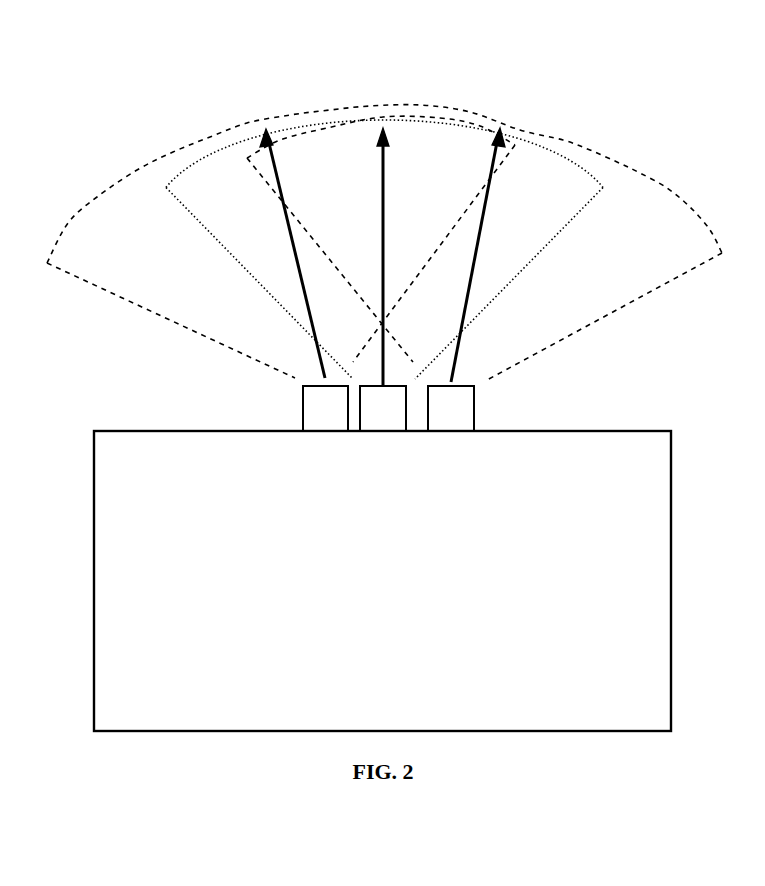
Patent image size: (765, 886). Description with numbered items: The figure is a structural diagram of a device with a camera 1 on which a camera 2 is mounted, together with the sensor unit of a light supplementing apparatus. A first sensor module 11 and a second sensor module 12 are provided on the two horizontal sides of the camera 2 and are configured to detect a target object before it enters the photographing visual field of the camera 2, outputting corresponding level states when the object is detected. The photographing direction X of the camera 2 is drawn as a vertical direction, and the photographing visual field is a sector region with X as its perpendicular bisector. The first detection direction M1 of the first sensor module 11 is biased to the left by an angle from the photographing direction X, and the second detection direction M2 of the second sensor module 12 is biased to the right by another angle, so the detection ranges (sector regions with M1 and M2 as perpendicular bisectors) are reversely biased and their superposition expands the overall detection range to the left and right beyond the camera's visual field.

The device with a camera 1 is at (382, 581).
The camera 2 is at (383, 408).
The first sensor module 11 is at (325, 408).
The second sensor module 12 is at (451, 408).
The photographing direction X is at (381, 182).
The first detection direction M1 is at (273, 163).
The second detection direction M2 is at (480, 225).